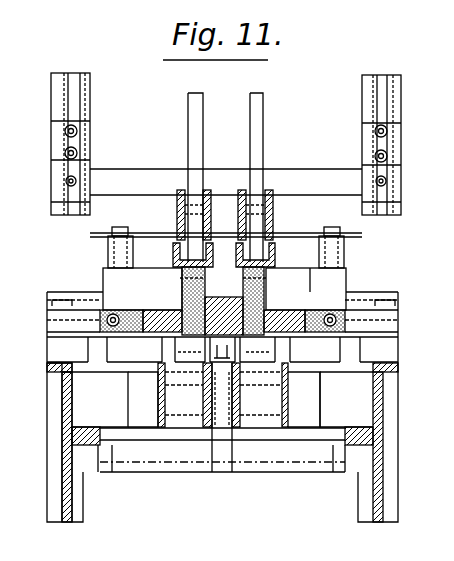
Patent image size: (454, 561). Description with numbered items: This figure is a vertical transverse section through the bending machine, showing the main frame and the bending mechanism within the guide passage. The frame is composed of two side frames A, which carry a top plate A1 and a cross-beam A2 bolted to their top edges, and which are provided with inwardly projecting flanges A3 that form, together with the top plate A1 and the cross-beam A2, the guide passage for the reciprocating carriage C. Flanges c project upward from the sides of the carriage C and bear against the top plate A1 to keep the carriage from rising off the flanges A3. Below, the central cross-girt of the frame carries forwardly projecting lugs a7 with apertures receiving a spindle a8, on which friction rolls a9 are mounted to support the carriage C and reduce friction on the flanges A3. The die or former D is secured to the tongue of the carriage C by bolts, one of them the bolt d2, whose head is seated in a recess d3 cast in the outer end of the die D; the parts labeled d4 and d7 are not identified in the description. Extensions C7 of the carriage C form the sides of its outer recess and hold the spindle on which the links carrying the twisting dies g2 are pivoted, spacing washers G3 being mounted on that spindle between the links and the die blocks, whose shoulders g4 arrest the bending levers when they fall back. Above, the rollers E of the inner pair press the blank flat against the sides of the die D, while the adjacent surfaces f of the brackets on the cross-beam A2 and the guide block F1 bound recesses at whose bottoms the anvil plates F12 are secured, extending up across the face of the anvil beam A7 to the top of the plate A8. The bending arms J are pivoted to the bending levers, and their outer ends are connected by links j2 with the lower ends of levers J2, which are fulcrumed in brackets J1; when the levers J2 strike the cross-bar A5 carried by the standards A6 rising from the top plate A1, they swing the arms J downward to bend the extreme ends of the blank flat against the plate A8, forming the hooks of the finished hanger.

The side frame A is at (60, 350).
The top plate A1 is at (148, 236).
The cross-beam A2 is at (52, 306).
The inwardly projecting flange A3 is at (72, 436).
The cross-bar A5 is at (230, 172).
The standard A6 is at (80, 73).
The anvil beam A7 is at (103, 278).
The top-plate A8 is at (346, 278).
The bending arm J is at (173, 252).
The bracket J1 is at (211, 208).
The lever J2 is at (195, 121).
The link j2 is at (226, 227).
The guide block F1 is at (219, 301).
The anvil plate F12 is at (222, 286).
The adjacent surface of bracket f is at (222, 310).
The roller E is at (222, 329).
The reciprocating carriage C is at (220, 353).
The flange c is at (222, 351).
The extension C7 is at (222, 399).
The spacing roll G3 is at (222, 422).
The twisting die g2 is at (223, 395).
The shoulder g4 is at (222, 450).
The die D is at (206, 417).
The bolt d2 is at (224, 351).
The recess d3 is at (222, 345).
The valve stem d4 is at (222, 398).
The outlet d7 is at (222, 472).
The lug a7 is at (108, 472).
The spindle a8 is at (182, 472).
The friction roll a9 is at (221, 457).